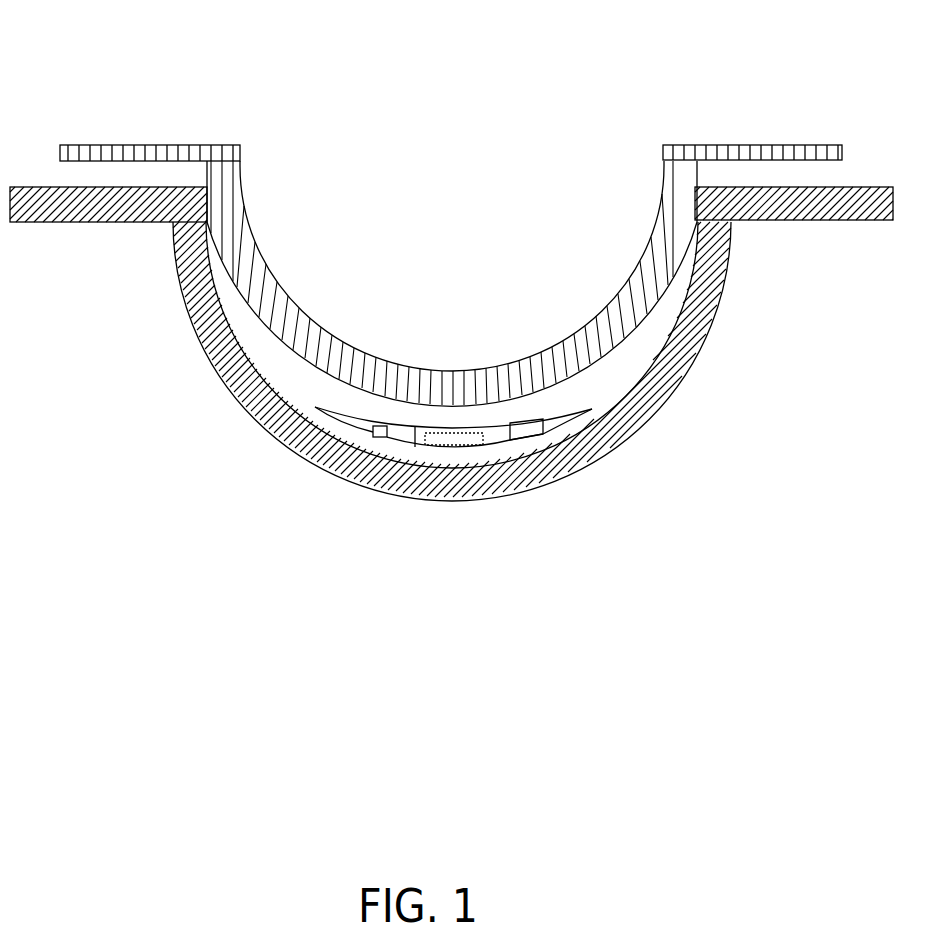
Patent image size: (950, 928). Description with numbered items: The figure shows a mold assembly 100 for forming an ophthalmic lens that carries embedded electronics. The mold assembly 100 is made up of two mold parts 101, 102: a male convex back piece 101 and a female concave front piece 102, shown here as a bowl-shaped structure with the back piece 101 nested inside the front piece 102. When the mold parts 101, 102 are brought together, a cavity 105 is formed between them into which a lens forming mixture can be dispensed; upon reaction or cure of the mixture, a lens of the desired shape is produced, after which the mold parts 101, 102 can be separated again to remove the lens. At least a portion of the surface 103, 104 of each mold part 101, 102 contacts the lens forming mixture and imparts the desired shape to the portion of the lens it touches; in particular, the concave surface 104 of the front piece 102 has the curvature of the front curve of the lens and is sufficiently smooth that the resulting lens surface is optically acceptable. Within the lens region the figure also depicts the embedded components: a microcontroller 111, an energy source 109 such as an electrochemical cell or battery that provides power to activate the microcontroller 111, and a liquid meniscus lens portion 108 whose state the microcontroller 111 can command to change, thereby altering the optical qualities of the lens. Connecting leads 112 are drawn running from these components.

The mold assembly 100 is at (382, 186).
The male convex piece (back piece) 101 is at (650, 258).
The female concave piece (front piece) 102 is at (300, 438).
The mold part surface 103 is at (502, 400).
The concave surface 104 is at (545, 462).
The cavity 105 is at (282, 387).
The liquid meniscus lens portion 108 is at (457, 435).
The energy source 109 is at (390, 439).
The microcontroller 111 is at (517, 440).
The leads 112 is at (415, 447).